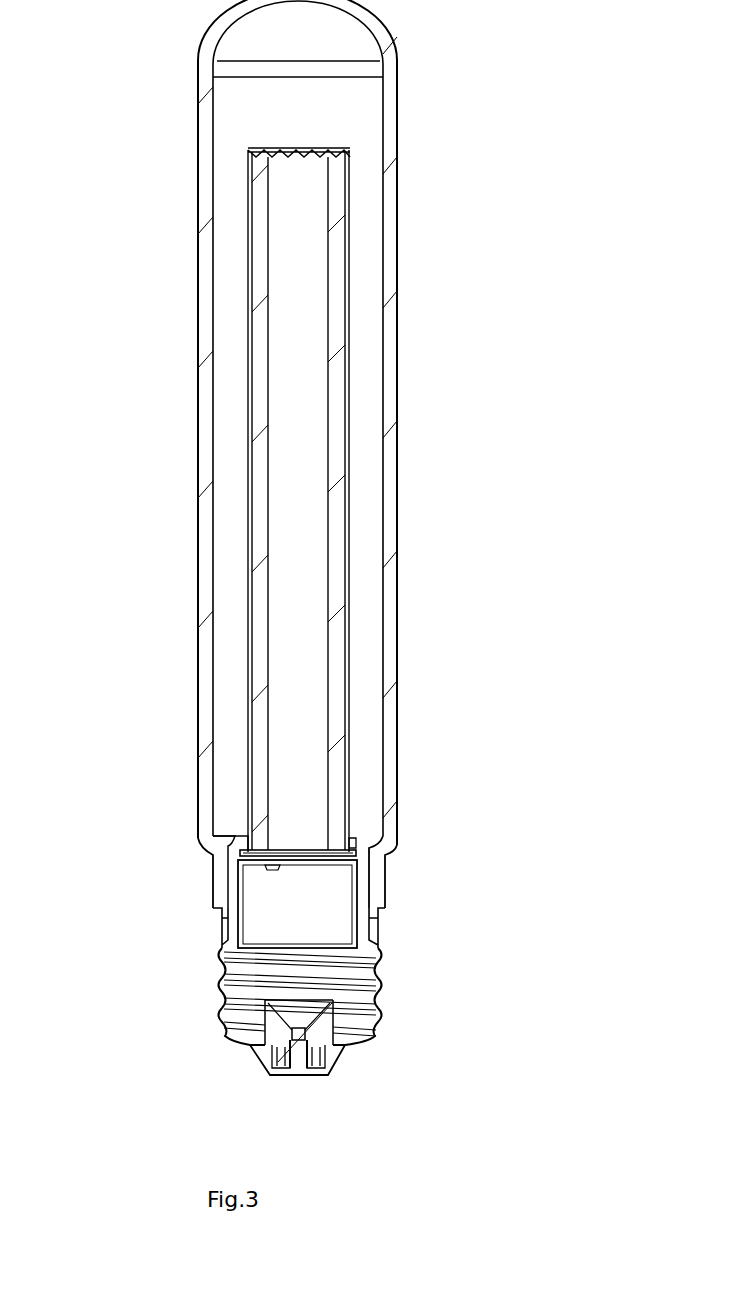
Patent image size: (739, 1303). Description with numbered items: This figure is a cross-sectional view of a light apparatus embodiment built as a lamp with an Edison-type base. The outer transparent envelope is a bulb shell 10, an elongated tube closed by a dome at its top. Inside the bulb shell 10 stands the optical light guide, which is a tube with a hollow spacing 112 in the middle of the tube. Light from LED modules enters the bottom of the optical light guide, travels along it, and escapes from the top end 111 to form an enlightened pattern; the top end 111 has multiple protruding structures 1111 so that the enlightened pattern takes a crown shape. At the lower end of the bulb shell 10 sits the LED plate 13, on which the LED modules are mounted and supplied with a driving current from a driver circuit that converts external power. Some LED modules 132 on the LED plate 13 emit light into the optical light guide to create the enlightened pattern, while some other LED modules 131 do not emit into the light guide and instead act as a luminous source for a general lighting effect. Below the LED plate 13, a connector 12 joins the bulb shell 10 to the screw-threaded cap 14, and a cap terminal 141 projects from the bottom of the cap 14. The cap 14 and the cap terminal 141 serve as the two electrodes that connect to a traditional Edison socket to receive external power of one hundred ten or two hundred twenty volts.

The bulb shell 10 is at (199, 328).
The top end of the optical light guide 111 is at (350, 151).
The protruding structures 1111 is at (248, 150).
The hollow spacing 112 is at (292, 180).
The LED plate 13 is at (345, 838).
The LED modules 131 is at (300, 848).
The LED modules 132 is at (247, 847).
The connector 12 is at (360, 874).
The cap 14 is at (372, 996).
The cap terminal 141 is at (298, 1075).